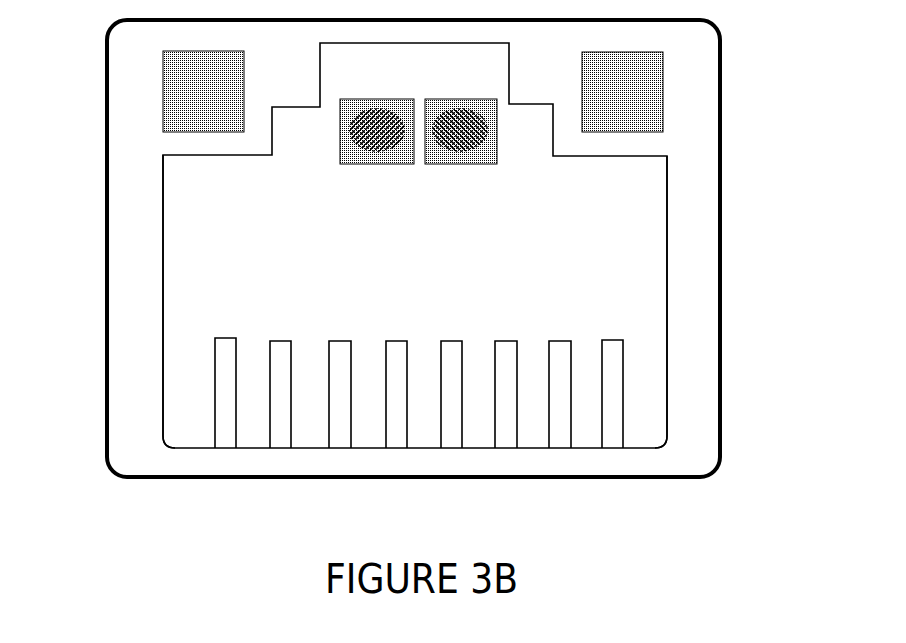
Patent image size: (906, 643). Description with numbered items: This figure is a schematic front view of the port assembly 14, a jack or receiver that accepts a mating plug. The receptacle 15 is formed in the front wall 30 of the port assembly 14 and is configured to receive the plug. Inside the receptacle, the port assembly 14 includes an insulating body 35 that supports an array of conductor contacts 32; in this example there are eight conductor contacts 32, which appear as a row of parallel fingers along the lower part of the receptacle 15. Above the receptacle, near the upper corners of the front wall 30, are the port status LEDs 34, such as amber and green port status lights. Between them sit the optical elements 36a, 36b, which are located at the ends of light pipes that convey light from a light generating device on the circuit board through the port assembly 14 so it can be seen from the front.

The port assembly 14 is at (620, 478).
The receptacle 15 is at (665, 310).
The front wall 30 is at (700, 381).
The conductor contacts 32 is at (501, 341).
The port status LEDs 34 is at (163, 92).
The insulating body 35 is at (188, 463).
The optical element 36a is at (384, 165).
The optical element 36b is at (486, 165).